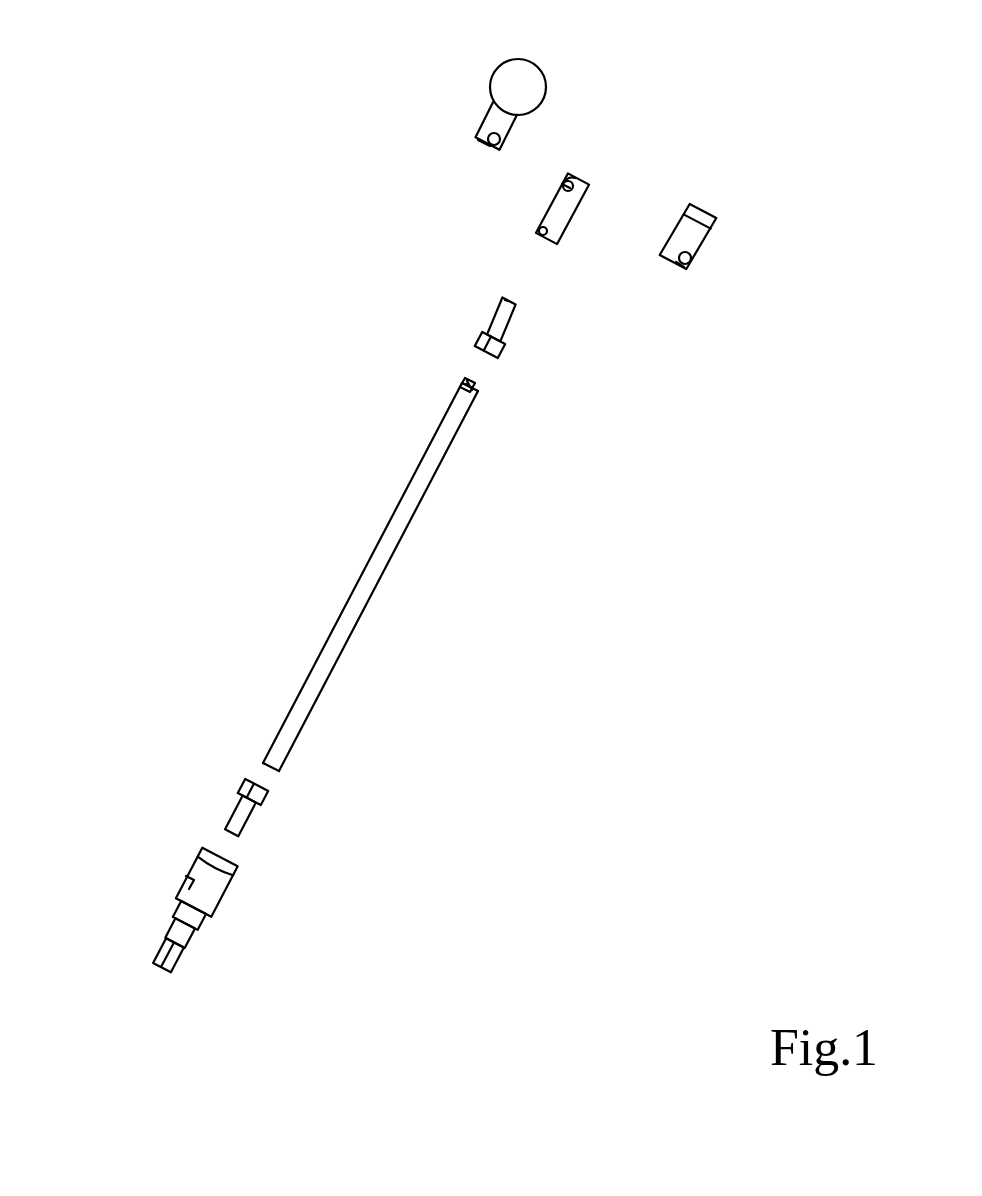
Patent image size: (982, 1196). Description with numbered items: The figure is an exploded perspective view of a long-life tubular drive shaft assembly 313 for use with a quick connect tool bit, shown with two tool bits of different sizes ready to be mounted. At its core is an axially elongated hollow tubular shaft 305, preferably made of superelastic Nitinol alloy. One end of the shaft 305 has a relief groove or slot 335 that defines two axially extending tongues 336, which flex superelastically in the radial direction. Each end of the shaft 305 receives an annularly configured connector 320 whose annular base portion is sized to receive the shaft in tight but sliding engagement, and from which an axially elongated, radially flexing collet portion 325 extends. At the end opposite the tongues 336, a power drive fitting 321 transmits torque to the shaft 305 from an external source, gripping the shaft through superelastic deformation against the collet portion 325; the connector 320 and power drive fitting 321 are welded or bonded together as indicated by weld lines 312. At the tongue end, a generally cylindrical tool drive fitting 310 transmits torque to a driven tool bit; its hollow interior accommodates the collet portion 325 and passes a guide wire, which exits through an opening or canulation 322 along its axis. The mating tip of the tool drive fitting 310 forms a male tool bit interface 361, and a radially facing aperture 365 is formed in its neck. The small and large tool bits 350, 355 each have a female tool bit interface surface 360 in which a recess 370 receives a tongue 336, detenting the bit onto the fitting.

The tubular shaft 305 is at (400, 527).
The tool drive fitting 310 is at (571, 226).
The weld line 312 is at (540, 228).
The drive shaft assembly 313 is at (280, 388).
The connector 320 is at (505, 349).
The power drive fitting 321 is at (213, 898).
The opening or canulation 322 is at (578, 174).
The collet portion 325 is at (519, 305).
The relief groove or slot 335 is at (477, 393).
The tongues 336 is at (463, 382).
The small tool bit 350 is at (718, 214).
The large tool bit 355 is at (497, 67).
The female tool bit interface surface 360 is at (508, 135).
The male tool bit interface 361 is at (570, 175).
The aperture 365 is at (566, 182).
The recess 370 is at (492, 144).